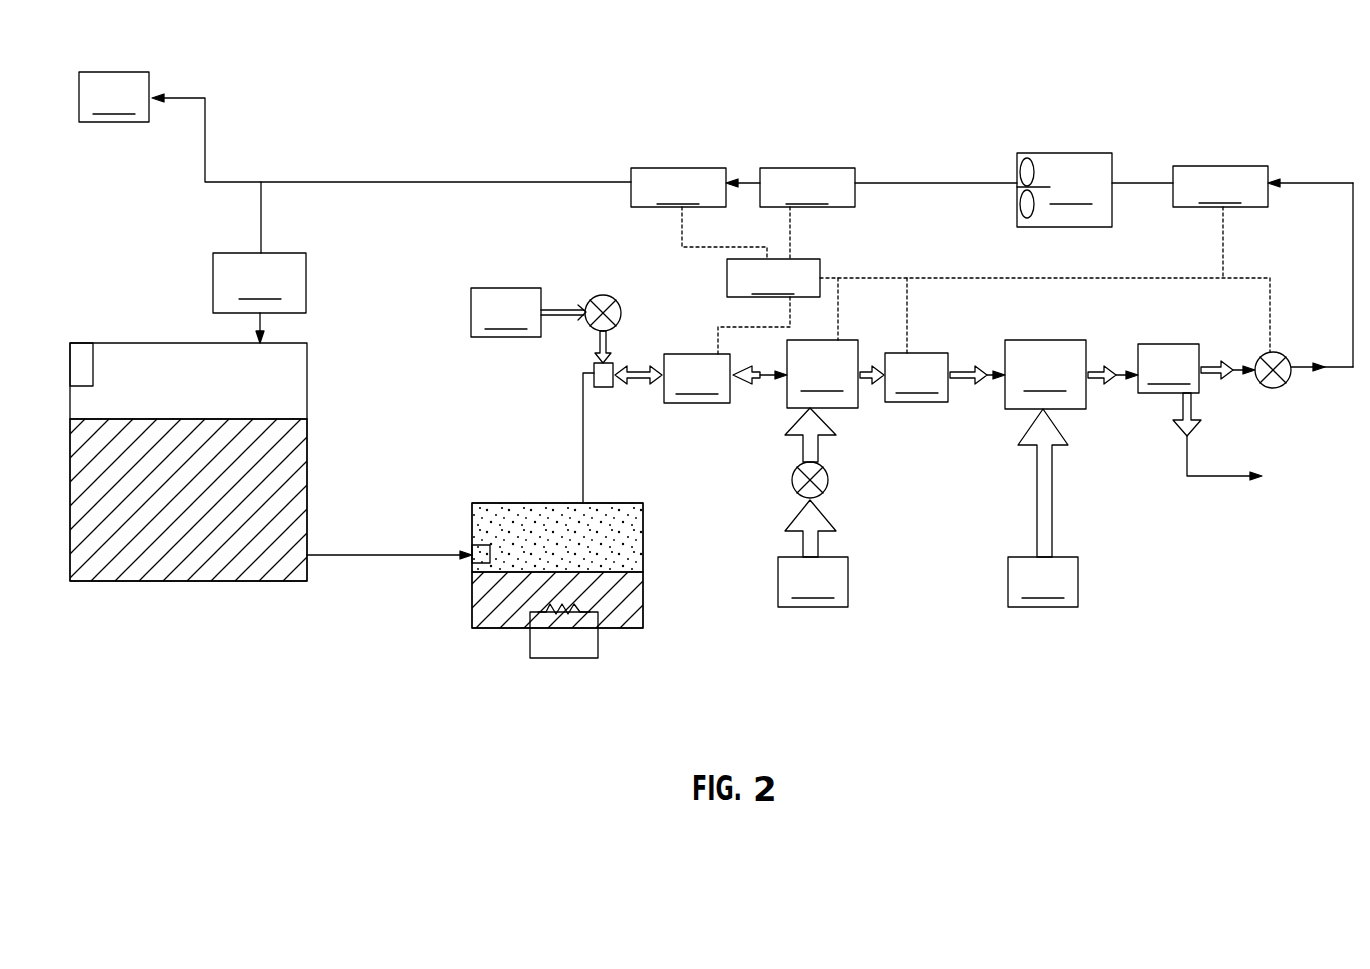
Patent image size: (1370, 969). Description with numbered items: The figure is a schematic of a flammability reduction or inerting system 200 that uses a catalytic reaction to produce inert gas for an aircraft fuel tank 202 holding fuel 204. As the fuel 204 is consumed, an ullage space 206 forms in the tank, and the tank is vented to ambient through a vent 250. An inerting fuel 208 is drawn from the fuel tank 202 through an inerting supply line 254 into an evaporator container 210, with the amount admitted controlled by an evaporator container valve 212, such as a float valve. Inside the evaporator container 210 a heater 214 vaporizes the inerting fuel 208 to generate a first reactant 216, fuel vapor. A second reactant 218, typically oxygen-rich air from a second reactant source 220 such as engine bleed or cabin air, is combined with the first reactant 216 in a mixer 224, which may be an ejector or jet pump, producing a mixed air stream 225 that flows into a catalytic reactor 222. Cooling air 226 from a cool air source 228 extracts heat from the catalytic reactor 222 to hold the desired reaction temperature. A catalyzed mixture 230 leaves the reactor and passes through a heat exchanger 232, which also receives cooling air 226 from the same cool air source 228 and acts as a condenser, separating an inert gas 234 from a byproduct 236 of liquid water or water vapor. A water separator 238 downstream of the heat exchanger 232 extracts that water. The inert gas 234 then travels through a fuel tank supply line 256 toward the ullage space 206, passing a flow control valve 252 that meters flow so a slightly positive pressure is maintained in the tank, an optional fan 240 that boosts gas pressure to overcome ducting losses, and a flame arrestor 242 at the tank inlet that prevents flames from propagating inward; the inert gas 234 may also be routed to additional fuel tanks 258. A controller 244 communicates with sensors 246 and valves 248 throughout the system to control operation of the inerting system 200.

The inerting system 200 is at (290, 80).
The fuel tank 202 is at (165, 343).
The fuel 204 is at (174, 557).
The ullage space 206 is at (280, 393).
The inerting fuel 208 is at (635, 600).
The evaporator container 210 is at (497, 503).
The evaporator container valve 212 is at (478, 563).
The heater 214 is at (598, 660).
The first reactant 216 is at (635, 533).
The second reactant 218 is at (560, 312).
The second reactant source 220 is at (528, 312).
The catalytic reactor 222 is at (822, 374).
The mixer 224 is at (605, 390).
The mixed air stream 225 is at (748, 380).
The cooling air 226 is at (818, 445).
The cool air source 228 is at (928, 582).
The catalyzed mixture 230 is at (866, 362).
The heat exchanger 232 is at (1071, 374).
The inert gas 234 is at (1213, 363).
The byproduct 236 is at (1183, 403).
The water separator 238 is at (1168, 368).
The fan 240 is at (1064, 190).
The flame arrestor 242 is at (259, 298).
The controller 244 is at (976, 280).
The sensors 246 is at (941, 284).
The valves 248 is at (598, 300).
The vent 250 is at (81, 352).
The flow control valve 252 is at (1272, 400).
The inerting supply line 254 is at (360, 558).
The fuel tank supply line 256 is at (400, 182).
The additional fuel tanks 258 is at (114, 97).